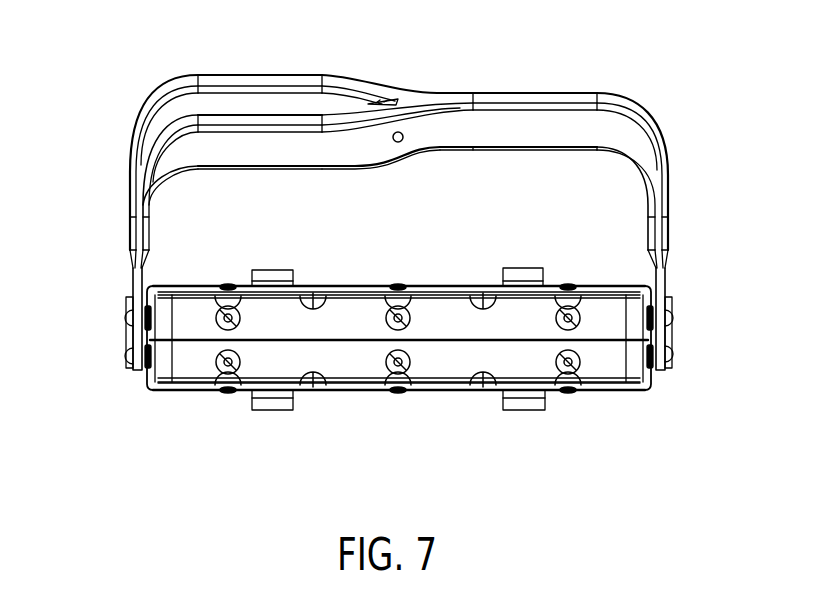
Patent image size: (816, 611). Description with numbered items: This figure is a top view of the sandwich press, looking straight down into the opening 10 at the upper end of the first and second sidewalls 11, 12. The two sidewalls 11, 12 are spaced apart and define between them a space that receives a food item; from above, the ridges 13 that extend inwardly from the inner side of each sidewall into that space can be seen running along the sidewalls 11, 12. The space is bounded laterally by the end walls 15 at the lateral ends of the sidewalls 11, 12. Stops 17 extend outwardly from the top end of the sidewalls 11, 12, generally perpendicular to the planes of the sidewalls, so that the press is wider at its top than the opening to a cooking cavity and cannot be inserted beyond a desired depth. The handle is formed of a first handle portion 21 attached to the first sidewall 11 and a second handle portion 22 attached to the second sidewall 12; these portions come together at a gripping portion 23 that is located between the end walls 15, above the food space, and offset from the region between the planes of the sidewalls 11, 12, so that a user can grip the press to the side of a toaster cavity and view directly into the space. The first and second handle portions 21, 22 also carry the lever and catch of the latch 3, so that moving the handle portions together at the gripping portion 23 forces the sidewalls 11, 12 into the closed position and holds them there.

The latch 3 is at (122, 351).
The opening 10 is at (283, 362).
The first sidewall 11 is at (405, 285).
The second sidewall 12 is at (423, 393).
The ridges 13 is at (315, 302).
The end wall 15 is at (150, 388).
The stops 17 is at (262, 269).
The first handle portion 21 is at (187, 98).
The second handle portion 22 is at (638, 130).
The gripping portion 23 is at (366, 85).